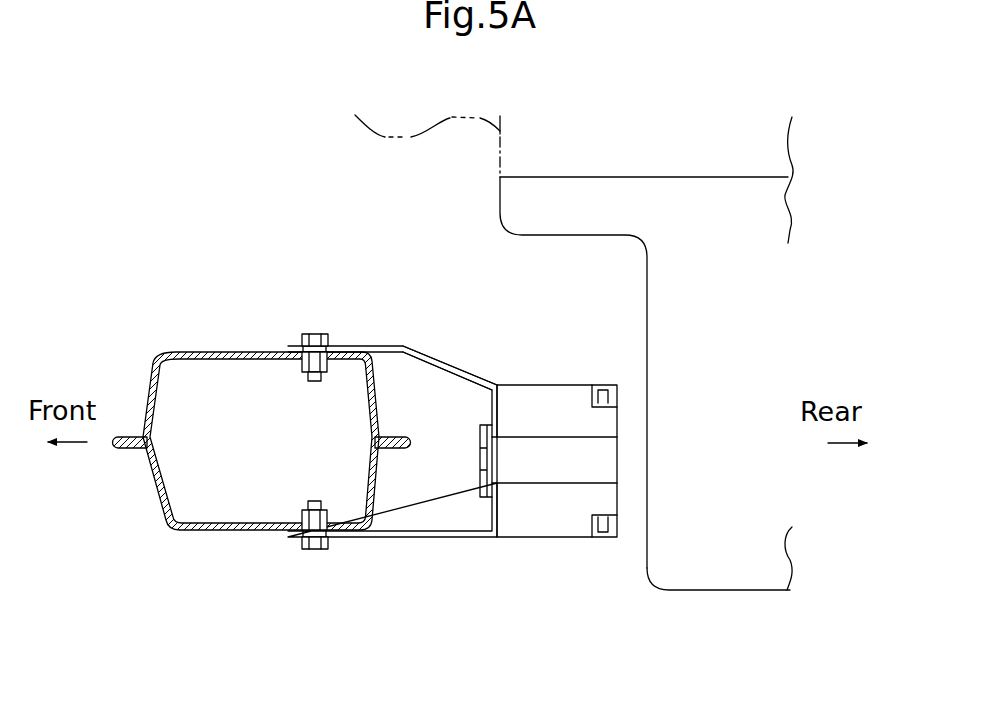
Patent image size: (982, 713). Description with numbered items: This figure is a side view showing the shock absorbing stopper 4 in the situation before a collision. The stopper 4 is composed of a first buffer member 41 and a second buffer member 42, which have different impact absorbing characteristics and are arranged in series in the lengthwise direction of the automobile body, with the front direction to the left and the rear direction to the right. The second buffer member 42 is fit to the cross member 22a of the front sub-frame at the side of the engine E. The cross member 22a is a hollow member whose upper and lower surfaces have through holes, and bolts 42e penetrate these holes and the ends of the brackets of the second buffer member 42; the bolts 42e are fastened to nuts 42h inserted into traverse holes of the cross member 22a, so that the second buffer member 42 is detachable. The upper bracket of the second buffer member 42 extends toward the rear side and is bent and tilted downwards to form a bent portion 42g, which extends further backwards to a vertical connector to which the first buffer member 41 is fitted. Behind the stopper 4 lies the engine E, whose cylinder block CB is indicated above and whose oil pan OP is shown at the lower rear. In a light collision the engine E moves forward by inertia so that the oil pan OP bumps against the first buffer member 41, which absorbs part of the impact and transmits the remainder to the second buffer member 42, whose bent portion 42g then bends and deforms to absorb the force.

The shock absorbing stopper 4 is at (386, 416).
The first buffer member 41 is at (553, 538).
The second buffer member 42 is at (343, 427).
The bolt 42e is at (313, 334).
The bent portion 42g is at (426, 346).
The nut 42h is at (300, 519).
The cross member 22a is at (260, 531).
The cylinder block CB is at (408, 137).
The engine E is at (766, 351).
The oil pan OP is at (725, 590).